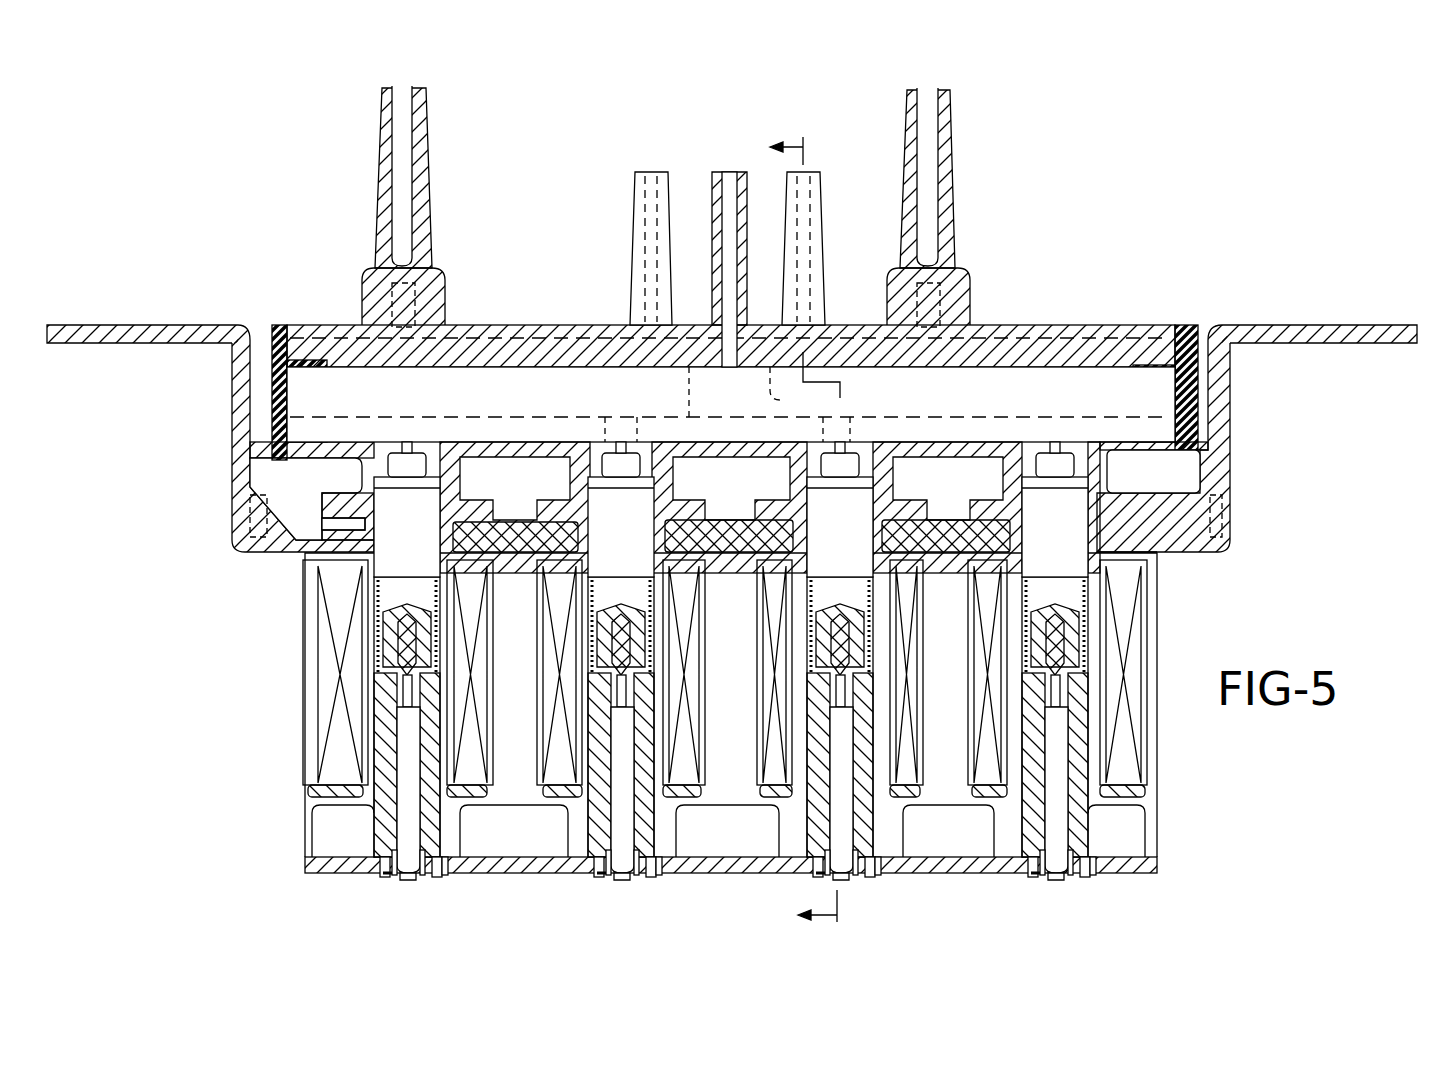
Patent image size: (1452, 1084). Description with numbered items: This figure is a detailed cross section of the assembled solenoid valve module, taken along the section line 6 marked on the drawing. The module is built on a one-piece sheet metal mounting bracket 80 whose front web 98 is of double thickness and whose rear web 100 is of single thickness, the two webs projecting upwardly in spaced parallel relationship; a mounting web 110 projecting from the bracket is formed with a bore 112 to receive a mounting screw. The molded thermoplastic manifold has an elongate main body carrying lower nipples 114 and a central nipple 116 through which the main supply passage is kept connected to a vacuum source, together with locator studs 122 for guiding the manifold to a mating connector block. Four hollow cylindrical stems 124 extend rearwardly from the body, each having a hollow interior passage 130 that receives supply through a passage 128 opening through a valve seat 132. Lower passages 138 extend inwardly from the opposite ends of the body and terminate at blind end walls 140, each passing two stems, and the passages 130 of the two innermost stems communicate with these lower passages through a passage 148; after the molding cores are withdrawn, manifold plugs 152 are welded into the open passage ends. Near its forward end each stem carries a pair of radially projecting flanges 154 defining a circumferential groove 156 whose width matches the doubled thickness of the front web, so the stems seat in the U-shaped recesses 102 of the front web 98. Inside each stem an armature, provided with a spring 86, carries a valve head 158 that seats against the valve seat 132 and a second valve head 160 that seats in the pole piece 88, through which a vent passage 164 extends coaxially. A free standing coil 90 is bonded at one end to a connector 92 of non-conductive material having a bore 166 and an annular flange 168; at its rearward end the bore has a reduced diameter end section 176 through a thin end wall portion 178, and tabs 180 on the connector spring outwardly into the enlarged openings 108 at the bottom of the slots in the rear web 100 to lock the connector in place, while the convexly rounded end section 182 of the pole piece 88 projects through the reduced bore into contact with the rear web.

The section line 6- 6 is at (816, 532).
The mounting bracket 80 is at (1310, 415).
The spring 86 is at (305, 640).
The pole piece 88 is at (422, 566).
The free standing coil 90 is at (540, 660).
The connector 92 is at (305, 850).
The front web 98 is at (731, 522).
The rear web 100 is at (972, 875).
The U-shaped recesses 102 is at (381, 514).
The enlarged openings 108 is at (445, 878).
The mounting web 110 is at (232, 385).
The bore 112 is at (130, 343).
The lower nipple 114 is at (635, 222).
The central nipple 116 is at (712, 190).
The locator studs 122 is at (428, 135).
The hollow cylindrical stems 124 is at (345, 481).
The passages 128 is at (408, 443).
The hollow interior passage 130 is at (330, 524).
The valve seat 132 is at (392, 456).
The lower passages 138 is at (500, 340).
The blind end walls 140 is at (770, 410).
The passage 148 is at (605, 417).
The manifold plugs 152 is at (276, 330).
The flanges 154 is at (1157, 580).
The circumferential groove 156 is at (1003, 528).
The valve head 158 is at (1123, 476).
The second valve head 160 is at (652, 660).
The vent passage 164 is at (397, 802).
The bore 166 is at (1005, 815).
The annular flange 168 is at (462, 800).
The reduced diameter end section 176 is at (392, 876).
The end wall portion 178 is at (1120, 862).
The tabs 180 is at (385, 876).
The convexly rounded end section 182 is at (406, 882).